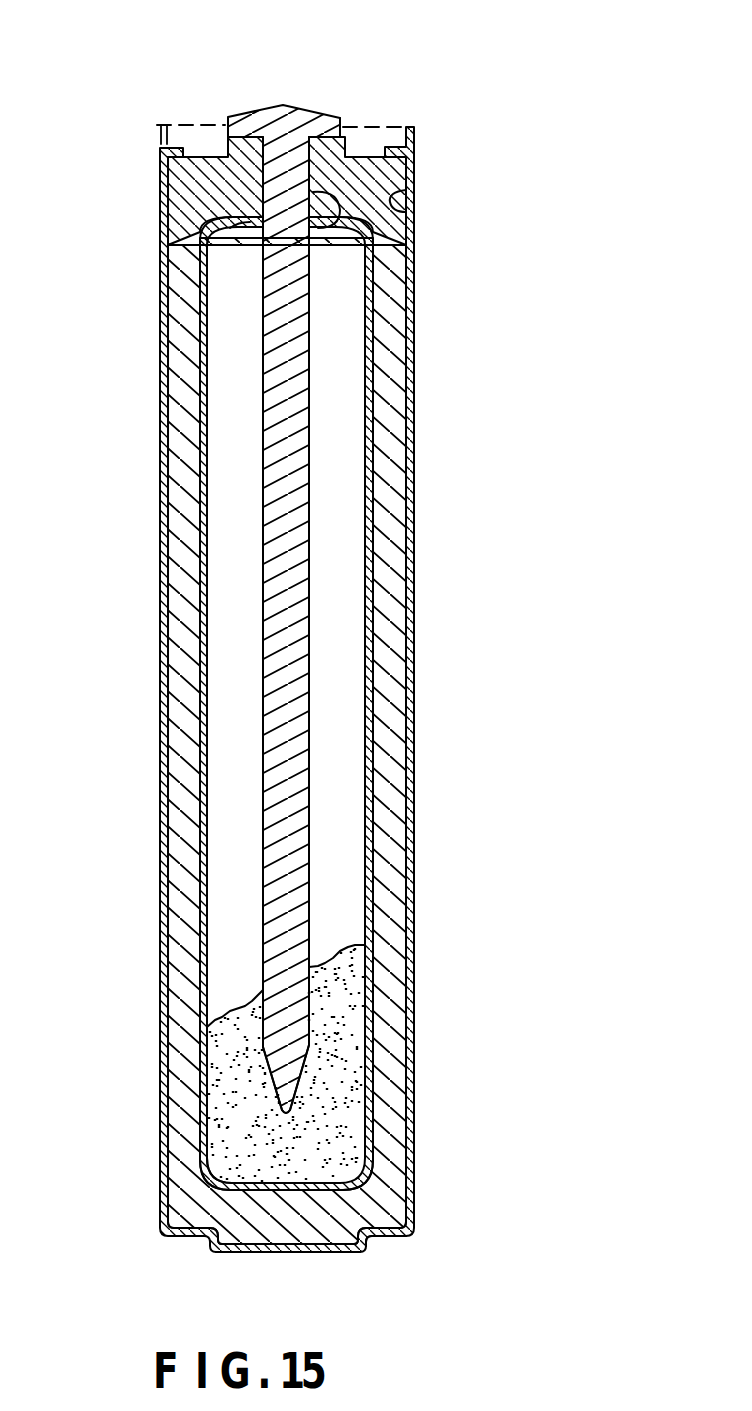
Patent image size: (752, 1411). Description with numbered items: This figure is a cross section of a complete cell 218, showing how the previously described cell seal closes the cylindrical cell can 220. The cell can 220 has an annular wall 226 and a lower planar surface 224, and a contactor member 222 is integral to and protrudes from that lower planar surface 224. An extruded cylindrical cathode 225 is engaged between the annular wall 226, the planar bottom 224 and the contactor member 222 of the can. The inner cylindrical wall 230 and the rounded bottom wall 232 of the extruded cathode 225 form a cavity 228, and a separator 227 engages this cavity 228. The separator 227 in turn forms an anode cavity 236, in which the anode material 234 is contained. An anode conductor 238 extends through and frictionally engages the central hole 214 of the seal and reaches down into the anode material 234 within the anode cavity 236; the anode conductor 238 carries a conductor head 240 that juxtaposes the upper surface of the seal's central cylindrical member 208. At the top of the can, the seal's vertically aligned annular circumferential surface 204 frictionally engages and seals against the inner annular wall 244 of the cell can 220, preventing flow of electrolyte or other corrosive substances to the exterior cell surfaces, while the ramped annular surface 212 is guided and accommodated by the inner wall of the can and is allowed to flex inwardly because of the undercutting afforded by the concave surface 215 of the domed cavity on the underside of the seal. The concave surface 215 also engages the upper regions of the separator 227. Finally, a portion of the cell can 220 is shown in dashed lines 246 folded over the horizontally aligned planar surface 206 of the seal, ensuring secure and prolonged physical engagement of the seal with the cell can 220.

The annular circumferential surface 204 is at (413, 167).
The planar surface 206 is at (197, 150).
The central cylindrical member 208 is at (333, 128).
The ramped annular surface 212 is at (380, 246).
The central hole 214 is at (342, 233).
The concave surface 215 is at (228, 232).
The cell 218 is at (428, 568).
The cell can 220 is at (413, 746).
The contactor member 222 is at (297, 1253).
The lower planar surface 224 is at (376, 1237).
The extruded cylindrical cathode 225 is at (184, 828).
The annular wall 226 is at (412, 853).
The separator 227 is at (200, 407).
The cavity 228 is at (200, 975).
The inner cylindrical wall 230 is at (208, 1105).
The rounded bottom wall 232 is at (237, 1180).
The anode material 234 is at (333, 1103).
The anode cavity 236 is at (230, 1122).
The anode conductor 238 is at (327, 497).
The conductor head 240 is at (266, 108).
The inner annular wall 244 is at (392, 200).
The dashed lines 246 is at (492, 106).